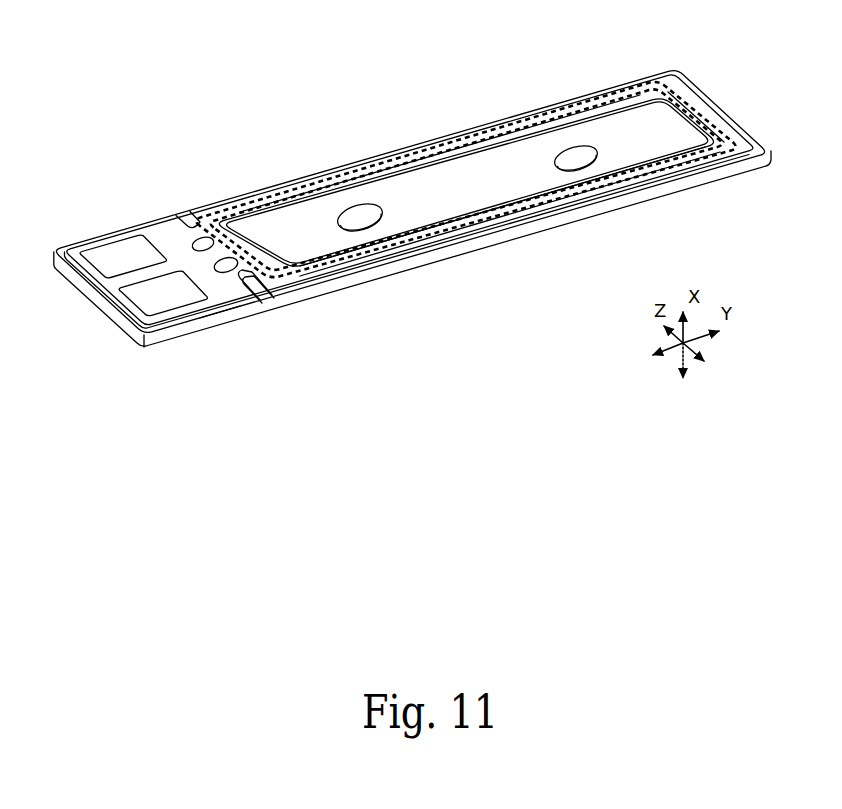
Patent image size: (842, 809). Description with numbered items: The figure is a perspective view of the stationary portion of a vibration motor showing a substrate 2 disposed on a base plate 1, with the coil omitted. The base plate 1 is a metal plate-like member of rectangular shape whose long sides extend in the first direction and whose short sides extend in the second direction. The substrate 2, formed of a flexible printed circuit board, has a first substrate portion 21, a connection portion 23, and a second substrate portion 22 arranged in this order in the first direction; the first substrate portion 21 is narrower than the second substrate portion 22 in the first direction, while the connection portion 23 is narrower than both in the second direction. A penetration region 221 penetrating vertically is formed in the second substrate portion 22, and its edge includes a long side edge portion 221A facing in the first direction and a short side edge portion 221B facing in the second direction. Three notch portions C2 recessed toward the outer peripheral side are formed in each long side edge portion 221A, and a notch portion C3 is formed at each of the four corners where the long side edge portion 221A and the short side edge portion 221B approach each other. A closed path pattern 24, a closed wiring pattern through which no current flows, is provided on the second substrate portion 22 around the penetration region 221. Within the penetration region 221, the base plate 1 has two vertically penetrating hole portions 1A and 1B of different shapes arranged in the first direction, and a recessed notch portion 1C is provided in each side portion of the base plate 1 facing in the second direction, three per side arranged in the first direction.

The base plate 1 is at (152, 345).
The substrate 2 is at (78, 250).
The hole portion 1A is at (378, 229).
The hole portion 1B is at (585, 167).
The recessed notch portion 1C is at (211, 207).
The first substrate portion 21 is at (226, 301).
The second substrate portion 22 is at (355, 266).
The connection portion 23 is at (252, 292).
The closed path pattern 24 is at (673, 170).
The penetration region 221 is at (512, 162).
The long side edge portion 221A is at (367, 173).
The short side edge portion 221B is at (673, 113).
The notch portion C2 is at (427, 157).
The notch portion C3 is at (657, 97).